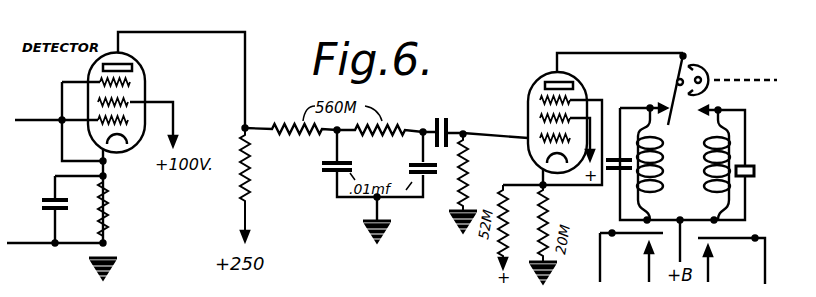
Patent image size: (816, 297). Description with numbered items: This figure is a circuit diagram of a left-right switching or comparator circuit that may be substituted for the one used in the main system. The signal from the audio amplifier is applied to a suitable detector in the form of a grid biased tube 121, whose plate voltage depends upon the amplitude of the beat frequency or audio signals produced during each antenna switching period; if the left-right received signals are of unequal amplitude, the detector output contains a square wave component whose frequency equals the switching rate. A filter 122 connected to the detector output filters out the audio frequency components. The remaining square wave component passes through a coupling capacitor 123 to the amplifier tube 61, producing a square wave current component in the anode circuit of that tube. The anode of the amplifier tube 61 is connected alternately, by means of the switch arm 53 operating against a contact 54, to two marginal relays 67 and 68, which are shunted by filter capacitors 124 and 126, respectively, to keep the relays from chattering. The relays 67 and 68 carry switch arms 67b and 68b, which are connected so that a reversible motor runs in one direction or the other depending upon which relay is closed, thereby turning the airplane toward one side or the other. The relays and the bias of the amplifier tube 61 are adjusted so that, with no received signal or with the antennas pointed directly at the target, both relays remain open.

The grid biased tube 121 is at (147, 88).
The filter 122 is at (390, 172).
The coupling capacitor 123 is at (441, 119).
The filter capacitor 124 is at (620, 176).
The filter capacitor 126 is at (748, 178).
The amplifier tube 61 is at (538, 78).
The switch arm 53 is at (677, 83).
The switch contact 54 is at (700, 72).
The marginal relay 67 is at (661, 183).
The marginal relay 68 is at (708, 173).
The switch arm 67b is at (640, 233).
The switch arm 68b is at (731, 260).